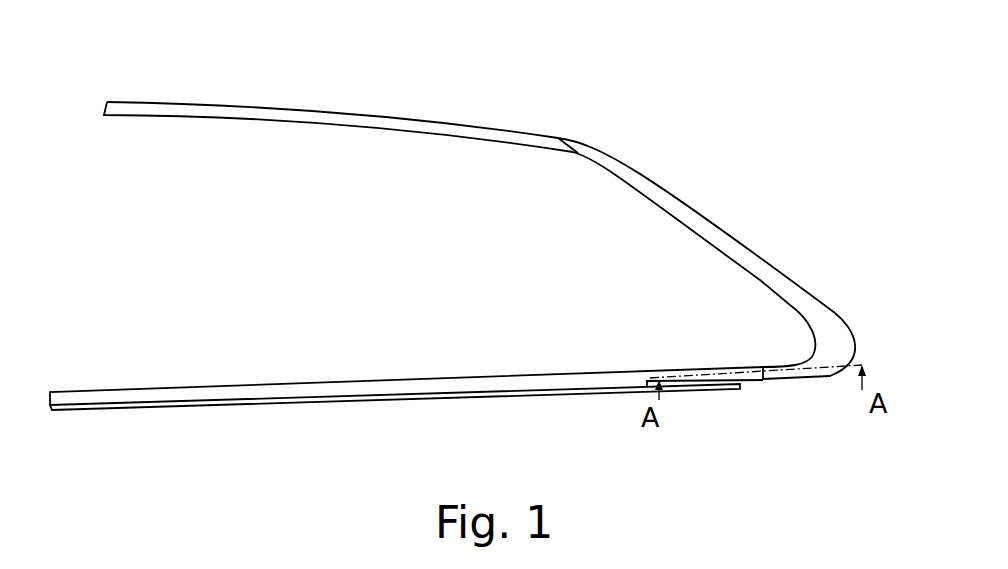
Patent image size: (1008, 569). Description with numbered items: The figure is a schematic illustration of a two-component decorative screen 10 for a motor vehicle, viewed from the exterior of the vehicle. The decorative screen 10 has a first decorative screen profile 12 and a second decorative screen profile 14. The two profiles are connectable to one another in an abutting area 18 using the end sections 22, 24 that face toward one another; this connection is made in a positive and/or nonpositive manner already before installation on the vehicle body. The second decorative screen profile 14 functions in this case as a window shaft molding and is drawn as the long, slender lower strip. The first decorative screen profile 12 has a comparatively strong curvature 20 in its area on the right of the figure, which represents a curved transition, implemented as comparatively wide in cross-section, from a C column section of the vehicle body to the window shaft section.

The decorative screen 10 is at (622, 88).
The first decorative screen profile 12 is at (686, 203).
The second decorative screen profile 14 is at (205, 390).
The abutting area 18 is at (727, 428).
The curvature 20 is at (847, 340).
The end section 22 is at (778, 371).
The end section 24 is at (669, 377).